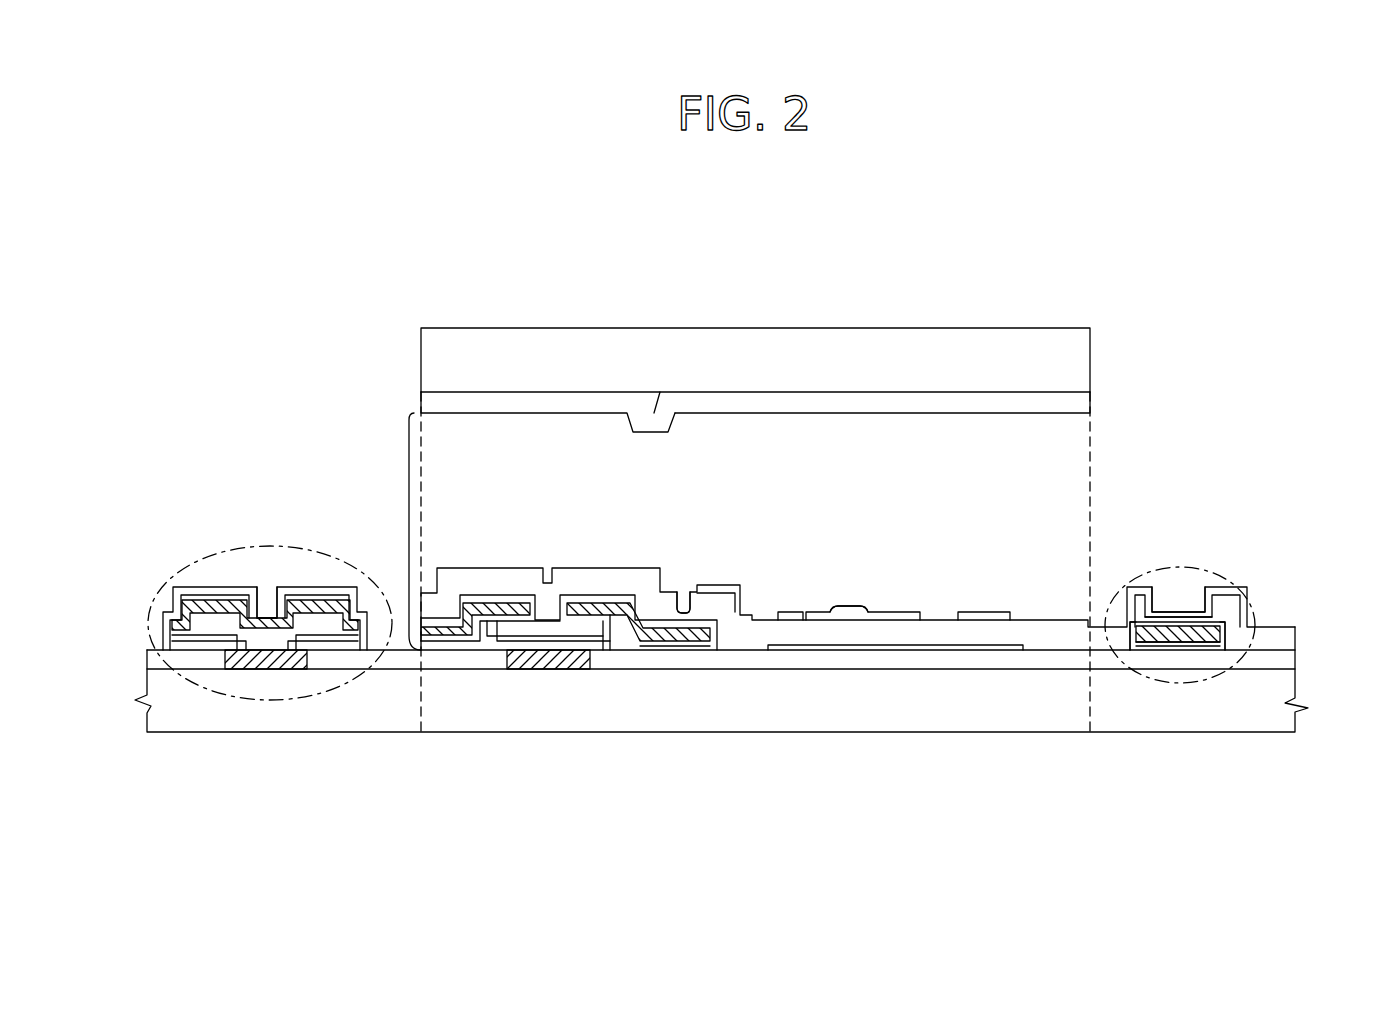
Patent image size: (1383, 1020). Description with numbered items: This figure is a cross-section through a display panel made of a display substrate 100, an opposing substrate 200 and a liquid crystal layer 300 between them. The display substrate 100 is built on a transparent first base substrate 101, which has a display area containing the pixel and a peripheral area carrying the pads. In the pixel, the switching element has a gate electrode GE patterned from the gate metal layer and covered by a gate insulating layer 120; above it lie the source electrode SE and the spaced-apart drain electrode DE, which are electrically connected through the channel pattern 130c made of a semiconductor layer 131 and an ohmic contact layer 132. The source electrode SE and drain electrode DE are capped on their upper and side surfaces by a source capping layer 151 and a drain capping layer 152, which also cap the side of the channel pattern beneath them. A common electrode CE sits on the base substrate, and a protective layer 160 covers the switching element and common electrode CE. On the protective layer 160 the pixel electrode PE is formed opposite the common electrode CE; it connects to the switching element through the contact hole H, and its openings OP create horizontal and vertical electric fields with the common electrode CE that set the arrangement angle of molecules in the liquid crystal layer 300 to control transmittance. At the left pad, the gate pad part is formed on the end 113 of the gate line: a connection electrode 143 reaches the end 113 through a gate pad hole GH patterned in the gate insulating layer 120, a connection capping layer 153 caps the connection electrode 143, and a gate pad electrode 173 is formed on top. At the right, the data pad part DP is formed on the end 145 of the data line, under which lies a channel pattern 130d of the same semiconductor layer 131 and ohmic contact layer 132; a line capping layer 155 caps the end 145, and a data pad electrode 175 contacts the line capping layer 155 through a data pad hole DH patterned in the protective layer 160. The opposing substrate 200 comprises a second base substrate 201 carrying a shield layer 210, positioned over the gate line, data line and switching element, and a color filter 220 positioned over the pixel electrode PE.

The display substrate 100 is at (130, 610).
The first base substrate 101 is at (1296, 693).
The end of the gate line 113 is at (265, 657).
The gate insulating layer 120 is at (1296, 657).
The channel pattern 130c is at (665, 813).
The channel pattern 130d is at (1200, 813).
The semiconductor layer 131 is at (640, 630).
The ohmic contact layer 132 is at (665, 636).
The connection electrode 143 is at (255, 632).
The end of the data line 145 is at (1168, 630).
The source capping layer 151 is at (445, 623).
The drain capping layer 152 is at (600, 618).
The connection capping layer 153 is at (168, 655).
The line capping layer 155 is at (1155, 625).
The protective layer 160 is at (1296, 633).
The gate pad electrode 173 is at (214, 598).
The data pad electrode 175 is at (1132, 587).
The opposing substrate 200 is at (1100, 330).
The second base substrate 201 is at (698, 357).
The shield layer 210 is at (540, 400).
The color filter 220 is at (848, 400).
The liquid crystal layer 300 is at (410, 513).
The gate pad hole GH is at (265, 605).
The contact hole H is at (687, 606).
The opening OP is at (850, 606).
The source electrode SE is at (455, 630).
The gate electrode GE is at (540, 660).
The drain electrode DE is at (593, 604).
The common electrode CE is at (893, 650).
The pixel electrode PE is at (984, 620).
The data pad hole DH is at (1186, 600).
The data pad part DP is at (1205, 585).